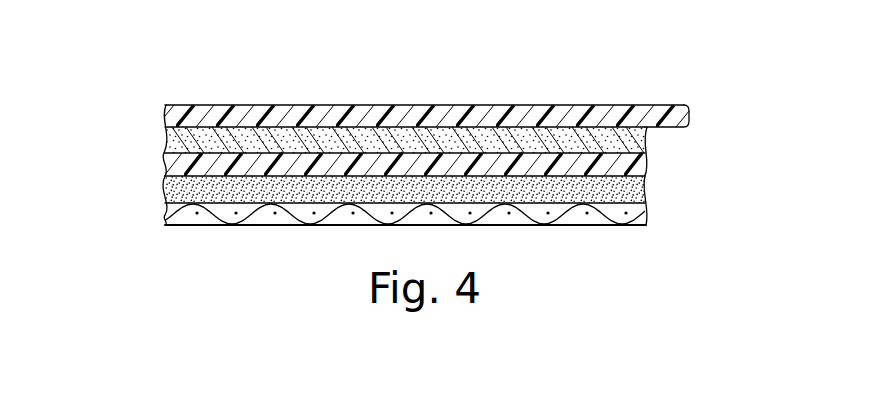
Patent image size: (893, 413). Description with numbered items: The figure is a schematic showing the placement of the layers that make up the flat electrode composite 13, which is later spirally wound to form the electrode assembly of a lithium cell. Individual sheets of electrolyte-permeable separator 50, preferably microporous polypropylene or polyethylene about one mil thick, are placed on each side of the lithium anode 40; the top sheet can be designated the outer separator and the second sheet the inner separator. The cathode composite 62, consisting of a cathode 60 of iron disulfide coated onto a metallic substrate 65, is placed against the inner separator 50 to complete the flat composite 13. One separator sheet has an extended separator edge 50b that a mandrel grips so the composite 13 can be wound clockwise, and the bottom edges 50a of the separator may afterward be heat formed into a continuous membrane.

The flat electrode composite 13 is at (225, 80).
The anode 40 is at (643, 140).
The separator 50 is at (628, 110).
The bottom edges of separator 50a is at (168, 163).
The extended separator edge 50b is at (688, 117).
The cathode 60 is at (643, 192).
The cathode composite 62 is at (158, 175).
The metallic substrate 65 is at (572, 218).